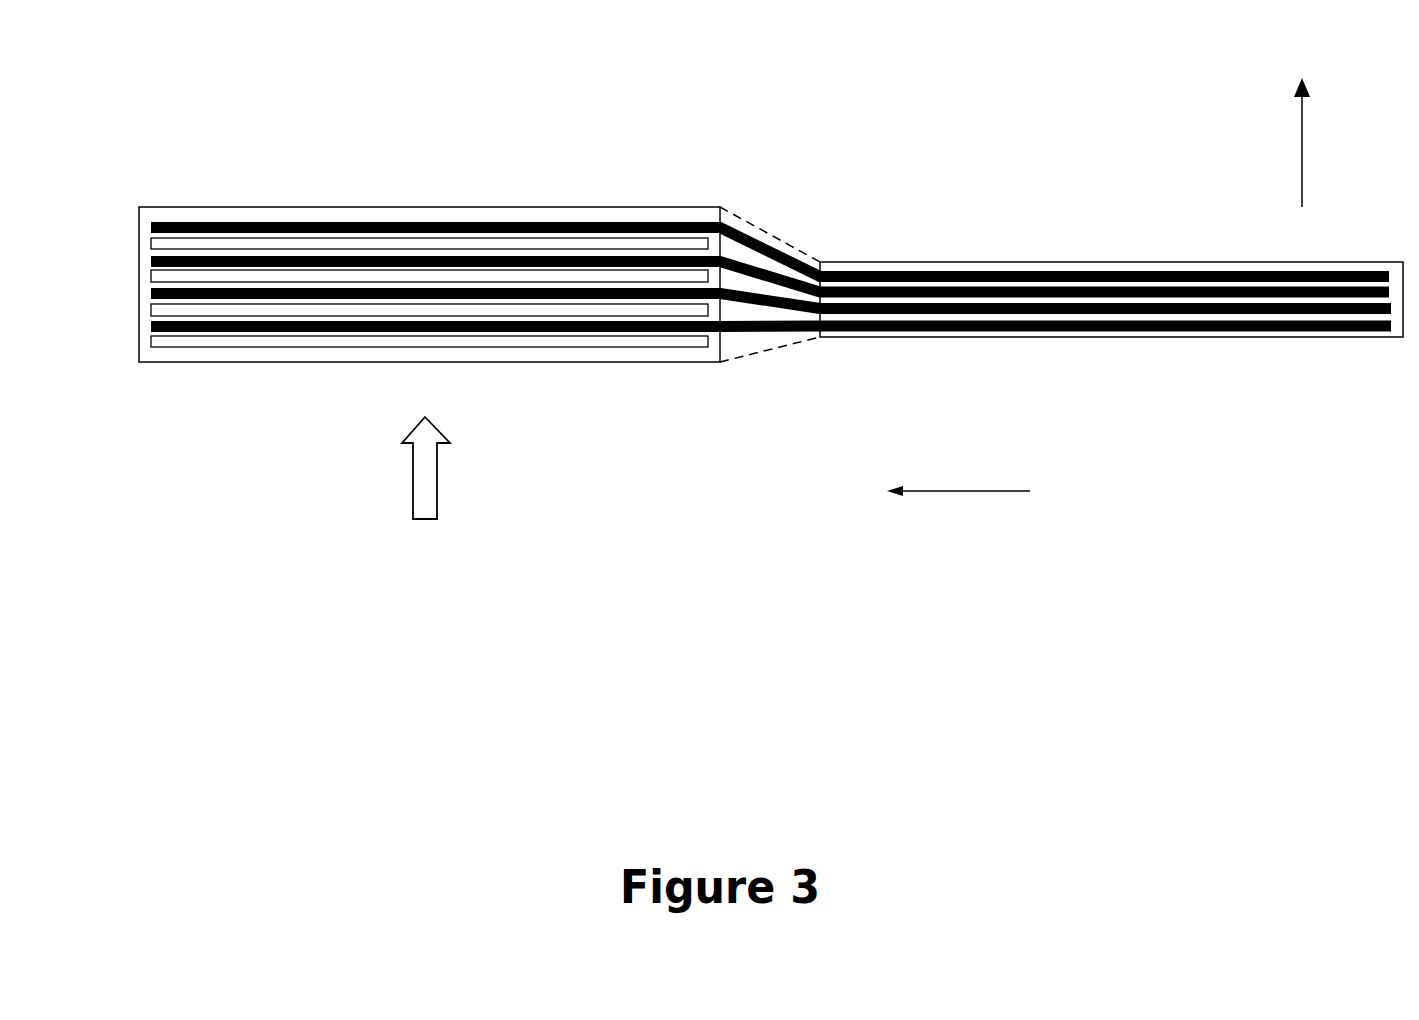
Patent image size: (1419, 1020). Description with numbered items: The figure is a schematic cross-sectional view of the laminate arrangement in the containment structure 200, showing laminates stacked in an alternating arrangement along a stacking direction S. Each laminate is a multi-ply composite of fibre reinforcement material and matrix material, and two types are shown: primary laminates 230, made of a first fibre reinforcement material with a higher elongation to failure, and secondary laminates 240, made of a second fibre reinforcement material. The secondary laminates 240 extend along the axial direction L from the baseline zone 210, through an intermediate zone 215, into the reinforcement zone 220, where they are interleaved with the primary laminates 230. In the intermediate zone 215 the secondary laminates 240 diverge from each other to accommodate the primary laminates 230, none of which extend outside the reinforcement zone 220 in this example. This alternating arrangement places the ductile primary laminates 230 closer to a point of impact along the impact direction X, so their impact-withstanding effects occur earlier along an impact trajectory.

The containment structure 200 is at (218, 33).
The baseline zone 210 is at (1049, 243).
The intermediate zone 215 is at (780, 216).
The reinforcement zone 220 is at (400, 197).
The primary laminates 230 is at (153, 310).
The secondary laminates 240 is at (153, 262).